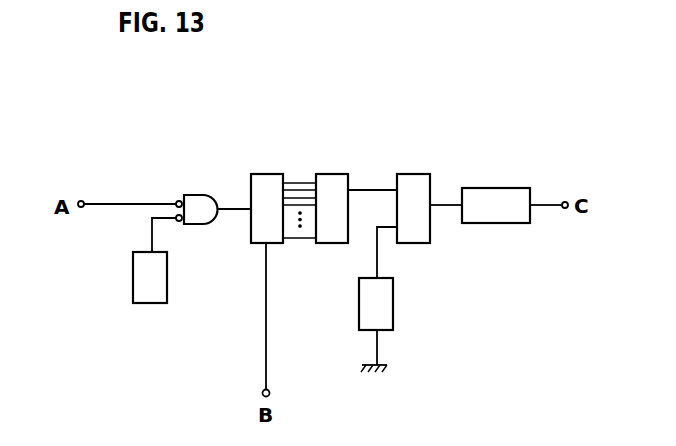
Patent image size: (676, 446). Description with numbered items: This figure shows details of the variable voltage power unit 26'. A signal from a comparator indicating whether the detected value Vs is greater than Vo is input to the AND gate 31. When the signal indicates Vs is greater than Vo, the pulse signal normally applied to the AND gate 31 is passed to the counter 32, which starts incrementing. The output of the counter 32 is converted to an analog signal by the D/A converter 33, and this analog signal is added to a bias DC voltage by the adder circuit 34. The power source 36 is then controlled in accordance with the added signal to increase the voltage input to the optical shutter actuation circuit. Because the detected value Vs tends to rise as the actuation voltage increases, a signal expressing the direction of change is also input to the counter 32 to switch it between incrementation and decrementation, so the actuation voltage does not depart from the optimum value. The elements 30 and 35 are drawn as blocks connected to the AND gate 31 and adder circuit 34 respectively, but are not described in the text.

The variable voltage power unit 26' is at (367, 76).
The oscillator 30 is at (167, 275).
The AND gate 31 is at (203, 195).
The counter 32 is at (267, 174).
The D/A converter 33 is at (334, 174).
The adder circuit 34 is at (422, 174).
The reference voltage source 35 is at (393, 300).
The power source 36 is at (483, 188).